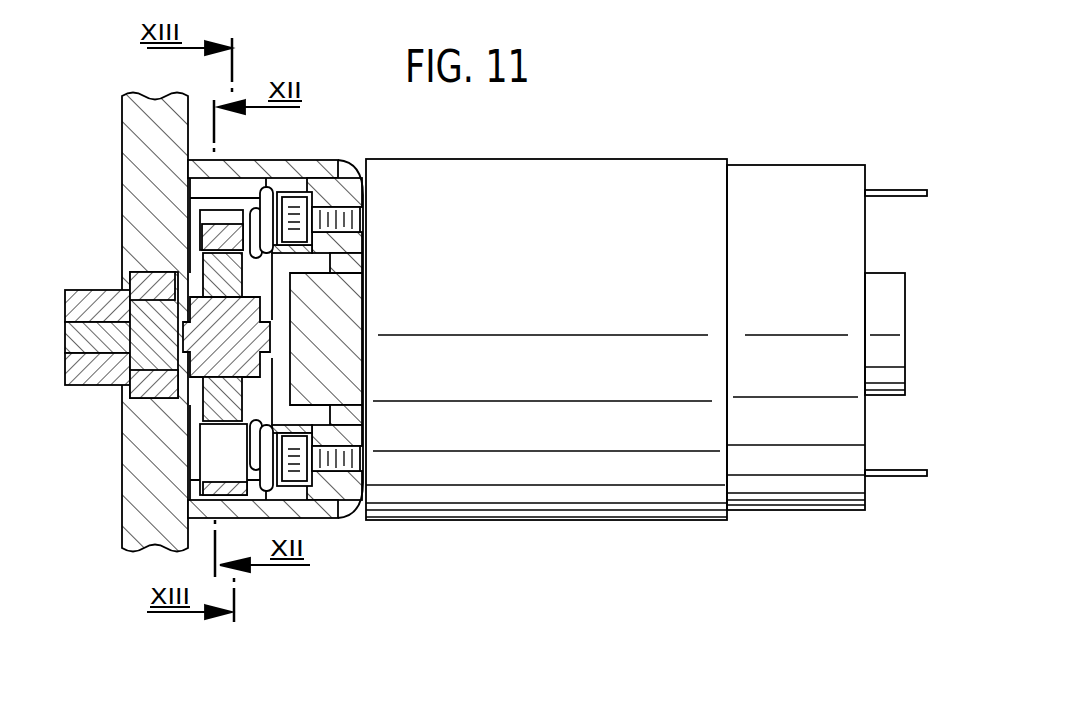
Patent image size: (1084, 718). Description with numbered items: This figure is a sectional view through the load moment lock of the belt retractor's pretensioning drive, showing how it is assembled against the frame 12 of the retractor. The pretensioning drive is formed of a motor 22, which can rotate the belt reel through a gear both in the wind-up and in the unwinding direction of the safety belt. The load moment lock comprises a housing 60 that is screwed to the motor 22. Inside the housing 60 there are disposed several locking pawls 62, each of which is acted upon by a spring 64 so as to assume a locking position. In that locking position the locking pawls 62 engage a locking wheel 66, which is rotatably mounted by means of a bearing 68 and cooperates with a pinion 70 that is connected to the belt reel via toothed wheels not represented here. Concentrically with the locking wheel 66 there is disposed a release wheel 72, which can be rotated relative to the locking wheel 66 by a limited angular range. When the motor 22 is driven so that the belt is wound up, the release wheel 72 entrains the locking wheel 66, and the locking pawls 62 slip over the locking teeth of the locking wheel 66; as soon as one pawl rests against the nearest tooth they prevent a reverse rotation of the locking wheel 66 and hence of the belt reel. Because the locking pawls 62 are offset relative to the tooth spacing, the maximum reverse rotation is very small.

The frame 12 is at (132, 130).
The motor 22 is at (563, 183).
The housing 60 is at (316, 508).
The locking pawls 62 is at (200, 237).
The spring 64 is at (262, 222).
The locking wheel 66 is at (137, 337).
The bearing 68 is at (150, 390).
The pinion 70 is at (96, 302).
The release wheel 72 is at (352, 216).